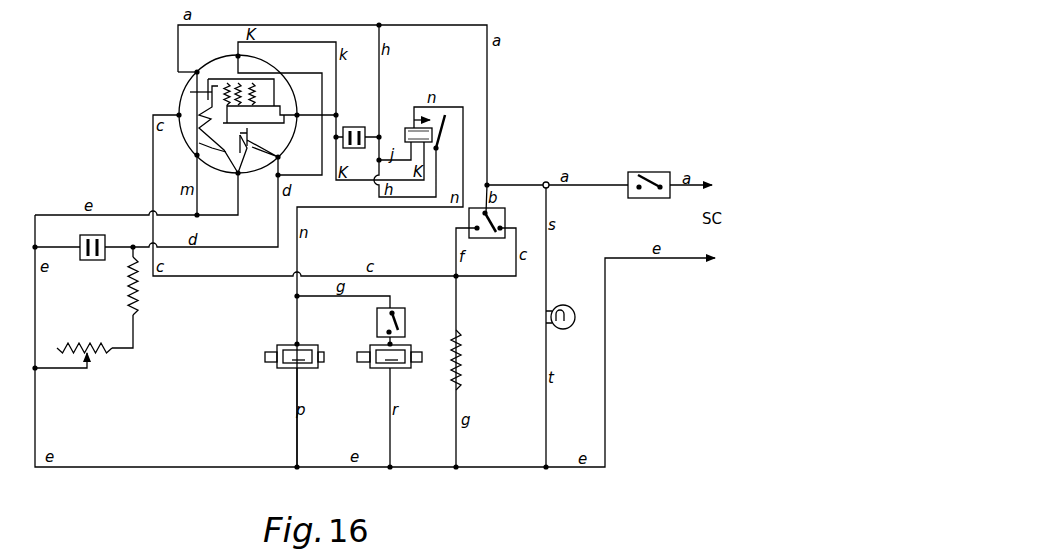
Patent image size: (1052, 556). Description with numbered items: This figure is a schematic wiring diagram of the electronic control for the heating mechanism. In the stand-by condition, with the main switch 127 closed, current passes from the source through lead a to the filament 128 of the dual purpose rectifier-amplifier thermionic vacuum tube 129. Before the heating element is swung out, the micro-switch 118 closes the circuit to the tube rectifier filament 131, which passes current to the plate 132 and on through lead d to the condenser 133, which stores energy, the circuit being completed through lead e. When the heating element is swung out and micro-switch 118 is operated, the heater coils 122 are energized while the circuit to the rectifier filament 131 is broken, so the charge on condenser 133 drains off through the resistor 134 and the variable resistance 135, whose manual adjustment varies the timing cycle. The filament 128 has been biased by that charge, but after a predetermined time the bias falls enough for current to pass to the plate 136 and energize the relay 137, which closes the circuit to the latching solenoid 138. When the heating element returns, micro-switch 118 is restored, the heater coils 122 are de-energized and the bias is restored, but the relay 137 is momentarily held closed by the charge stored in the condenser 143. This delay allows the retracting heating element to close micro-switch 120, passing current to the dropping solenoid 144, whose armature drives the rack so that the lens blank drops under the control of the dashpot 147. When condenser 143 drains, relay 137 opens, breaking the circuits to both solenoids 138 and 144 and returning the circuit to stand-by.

The micro-switch 118 is at (505, 211).
The micro-switch 120 is at (377, 321).
The heater coils 122 is at (459, 377).
The main switch 127 is at (653, 172).
The filament 128 is at (201, 122).
The dual purpose rectifier-amplifier thermionic vacuum tube 129 is at (181, 81).
The tube rectifier filament 131 is at (246, 171).
The plate 132 is at (280, 156).
The condenser 133 is at (82, 235).
The resistor 134 is at (130, 286).
The variable resistance 135 is at (87, 343).
The plate 136 is at (262, 92).
The relay 137 is at (403, 129).
The latching solenoid 138 is at (278, 370).
The condenser 143 is at (353, 125).
The dropping solenoid 144 is at (377, 372).
The dashpot 147 is at (571, 306).